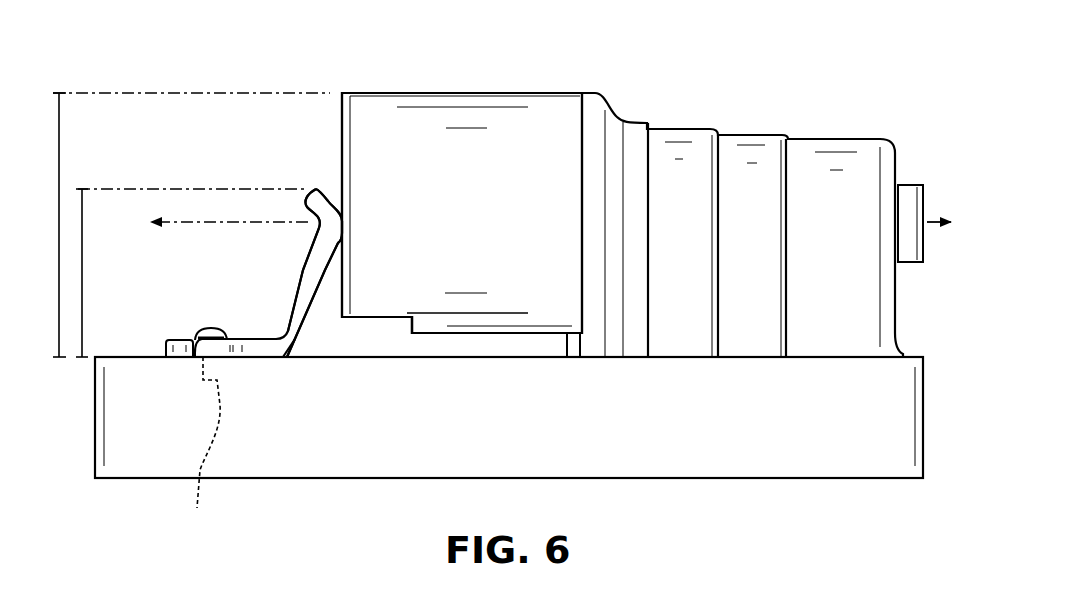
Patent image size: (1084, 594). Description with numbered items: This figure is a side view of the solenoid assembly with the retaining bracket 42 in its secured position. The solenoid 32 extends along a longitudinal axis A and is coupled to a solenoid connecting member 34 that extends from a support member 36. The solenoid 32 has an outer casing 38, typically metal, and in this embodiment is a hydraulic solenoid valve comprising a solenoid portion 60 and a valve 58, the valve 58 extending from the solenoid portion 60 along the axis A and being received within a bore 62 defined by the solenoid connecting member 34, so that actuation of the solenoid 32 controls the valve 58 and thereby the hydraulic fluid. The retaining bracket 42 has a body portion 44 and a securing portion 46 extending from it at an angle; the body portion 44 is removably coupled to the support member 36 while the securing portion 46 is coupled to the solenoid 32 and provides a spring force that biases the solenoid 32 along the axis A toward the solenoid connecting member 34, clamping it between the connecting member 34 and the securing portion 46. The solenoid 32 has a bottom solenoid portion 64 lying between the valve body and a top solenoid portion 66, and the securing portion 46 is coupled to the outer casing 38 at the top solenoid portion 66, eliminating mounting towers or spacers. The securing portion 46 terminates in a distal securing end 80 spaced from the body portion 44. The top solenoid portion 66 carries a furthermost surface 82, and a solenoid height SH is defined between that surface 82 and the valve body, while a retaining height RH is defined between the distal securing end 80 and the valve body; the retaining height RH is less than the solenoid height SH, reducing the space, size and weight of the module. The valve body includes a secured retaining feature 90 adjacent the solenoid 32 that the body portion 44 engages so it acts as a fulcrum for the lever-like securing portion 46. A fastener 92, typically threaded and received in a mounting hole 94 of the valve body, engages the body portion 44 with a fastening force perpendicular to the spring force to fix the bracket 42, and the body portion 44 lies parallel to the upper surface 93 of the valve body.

The solenoid 32 is at (403, 107).
The solenoid connecting member 34 is at (595, 92).
The support member 36 is at (468, 357).
The outer casing 38 is at (407, 302).
The retaining bracket 42 is at (286, 357).
The body portion 44 is at (254, 324).
The securing portion 46 is at (321, 340).
The valve 58 is at (918, 183).
The solenoid portion 60 is at (529, 66).
The bore 62 is at (903, 183).
The bottom solenoid portion 64 is at (531, 345).
The top solenoid portion 66 is at (327, 76).
The distal securing end 80 is at (315, 188).
The furthermost surface 82 is at (558, 90).
The secured retaining feature 90 is at (166, 351).
The fastener 92 is at (210, 327).
The upper surface 93 is at (357, 357).
The mounting hole 94 is at (200, 443).
The longitudinal axis A is at (197, 222).
The solenoid height SH is at (56, 225).
The retaining height RH is at (188, 273).